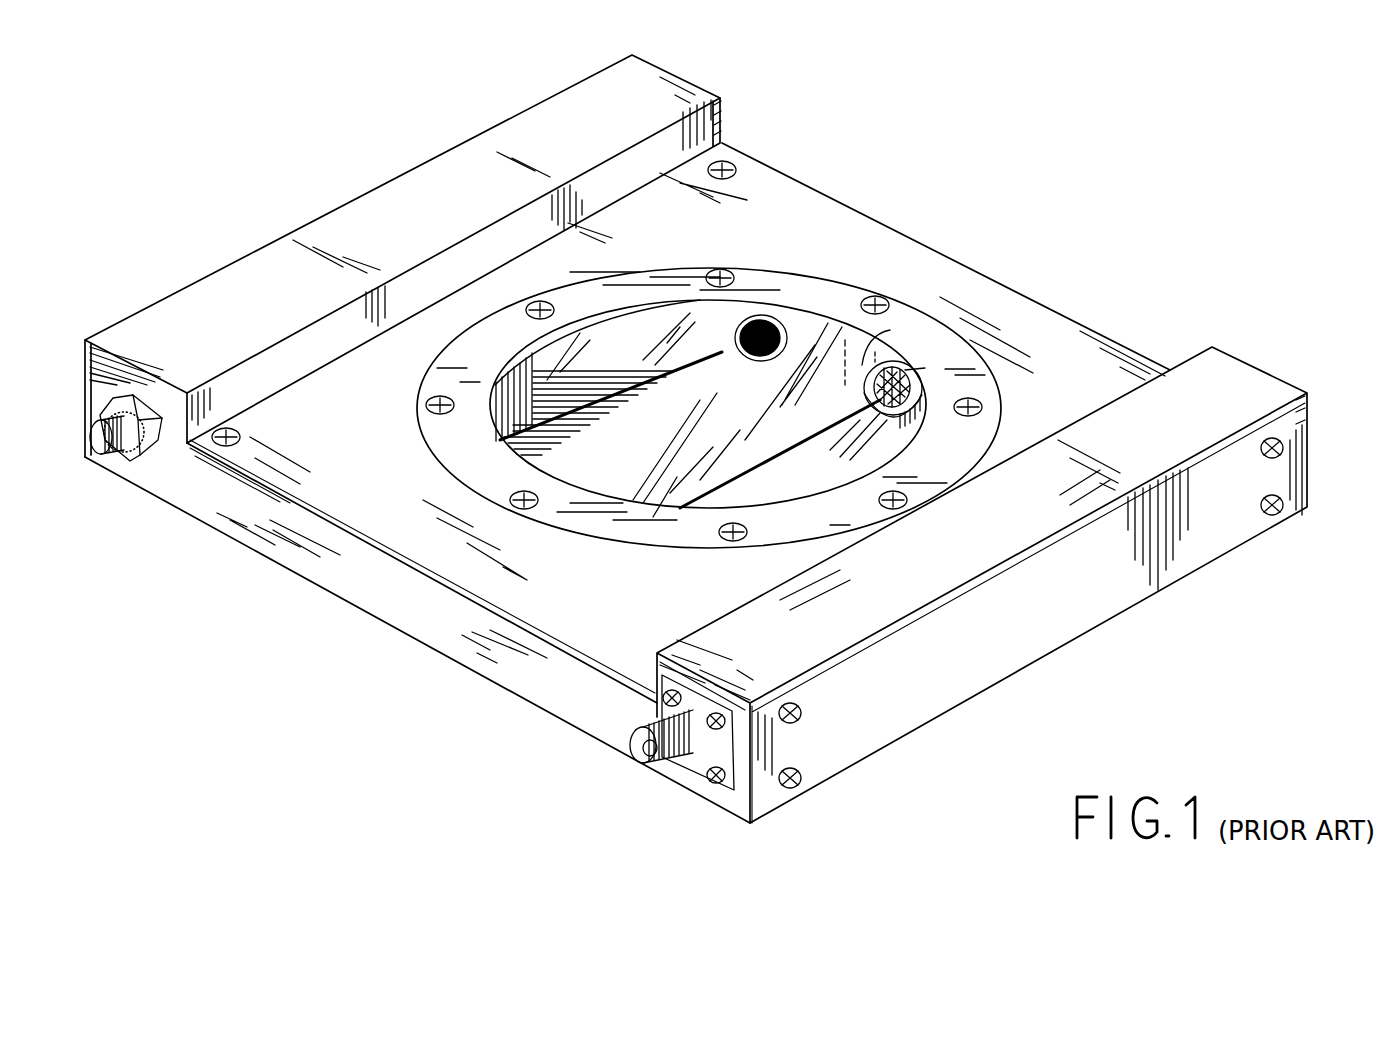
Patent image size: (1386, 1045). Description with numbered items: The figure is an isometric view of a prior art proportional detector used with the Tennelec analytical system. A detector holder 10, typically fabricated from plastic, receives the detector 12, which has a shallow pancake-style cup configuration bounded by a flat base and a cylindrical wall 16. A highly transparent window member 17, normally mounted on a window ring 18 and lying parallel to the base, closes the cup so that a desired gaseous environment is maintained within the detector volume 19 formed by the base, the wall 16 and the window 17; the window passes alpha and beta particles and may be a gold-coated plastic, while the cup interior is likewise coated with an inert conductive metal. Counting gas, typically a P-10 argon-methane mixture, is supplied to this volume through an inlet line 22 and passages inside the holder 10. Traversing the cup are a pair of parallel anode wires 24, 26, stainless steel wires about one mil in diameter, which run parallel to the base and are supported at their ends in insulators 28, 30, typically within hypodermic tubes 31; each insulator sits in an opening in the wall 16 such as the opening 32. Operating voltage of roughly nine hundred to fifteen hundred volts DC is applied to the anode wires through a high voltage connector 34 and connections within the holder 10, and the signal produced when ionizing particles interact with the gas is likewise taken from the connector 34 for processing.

The detector holder 10 is at (1233, 380).
The detector 12 is at (540, 432).
The cylindrical wall 16 is at (706, 357).
The window member 17 is at (505, 455).
The window ring 18 is at (868, 385).
The detector volume 19 is at (603, 335).
The inlet line 22 is at (95, 440).
The anode wire 24 is at (540, 443).
The anode wire 26 is at (770, 457).
The insulator 28 is at (786, 330).
The insulator 30 is at (905, 370).
The hypodermic tube 31 is at (863, 340).
The opening 32 is at (762, 318).
The high voltage connector 34 is at (640, 765).